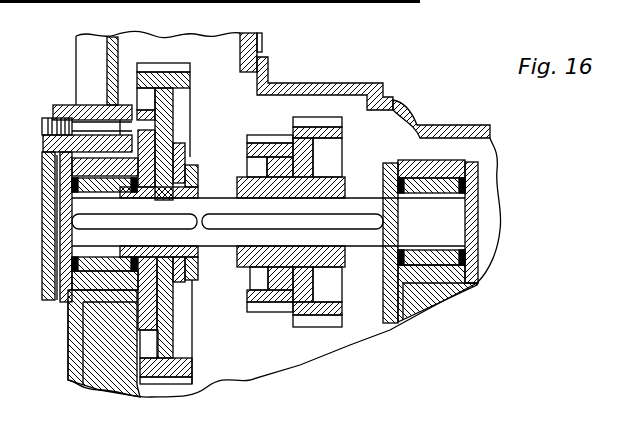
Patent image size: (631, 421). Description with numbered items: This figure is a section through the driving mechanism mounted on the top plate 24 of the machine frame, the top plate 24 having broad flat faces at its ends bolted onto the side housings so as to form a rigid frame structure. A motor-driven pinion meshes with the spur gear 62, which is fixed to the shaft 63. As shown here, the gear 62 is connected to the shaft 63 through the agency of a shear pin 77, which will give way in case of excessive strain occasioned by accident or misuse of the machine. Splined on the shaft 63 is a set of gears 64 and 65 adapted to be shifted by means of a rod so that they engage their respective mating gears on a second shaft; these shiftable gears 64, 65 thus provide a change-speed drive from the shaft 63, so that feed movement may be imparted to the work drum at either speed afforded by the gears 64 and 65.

The top plate 24 is at (413, 112).
The spur gear 62 is at (160, 72).
The shaft 63 is at (212, 203).
The gear 64 is at (263, 141).
The gear 65 is at (338, 120).
The shear pin 77 is at (167, 123).